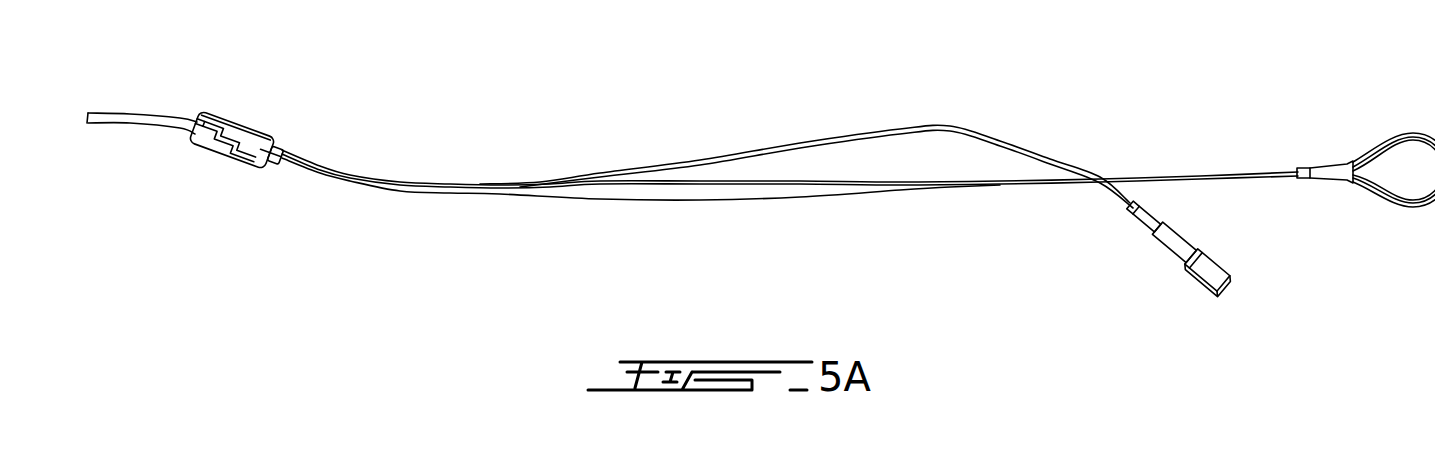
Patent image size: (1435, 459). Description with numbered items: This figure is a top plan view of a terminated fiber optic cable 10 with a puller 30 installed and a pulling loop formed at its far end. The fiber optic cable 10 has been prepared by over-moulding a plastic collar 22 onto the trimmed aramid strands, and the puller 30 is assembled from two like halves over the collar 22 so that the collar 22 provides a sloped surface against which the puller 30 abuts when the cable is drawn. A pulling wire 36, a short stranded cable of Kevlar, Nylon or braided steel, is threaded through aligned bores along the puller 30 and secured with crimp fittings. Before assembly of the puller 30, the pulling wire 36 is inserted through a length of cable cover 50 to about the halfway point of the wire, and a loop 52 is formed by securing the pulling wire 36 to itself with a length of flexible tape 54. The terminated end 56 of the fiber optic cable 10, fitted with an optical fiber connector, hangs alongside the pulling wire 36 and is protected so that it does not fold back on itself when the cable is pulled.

The fiber optic cable 10 is at (157, 127).
The puller 30 is at (228, 160).
The plastic collar 22 is at (265, 167).
The pulling wire 36 is at (833, 187).
The terminated end 56 is at (1203, 258).
The flexible tape 54 is at (1332, 178).
The cable cover 50 is at (1405, 206).
The loop 52 is at (1397, 170).